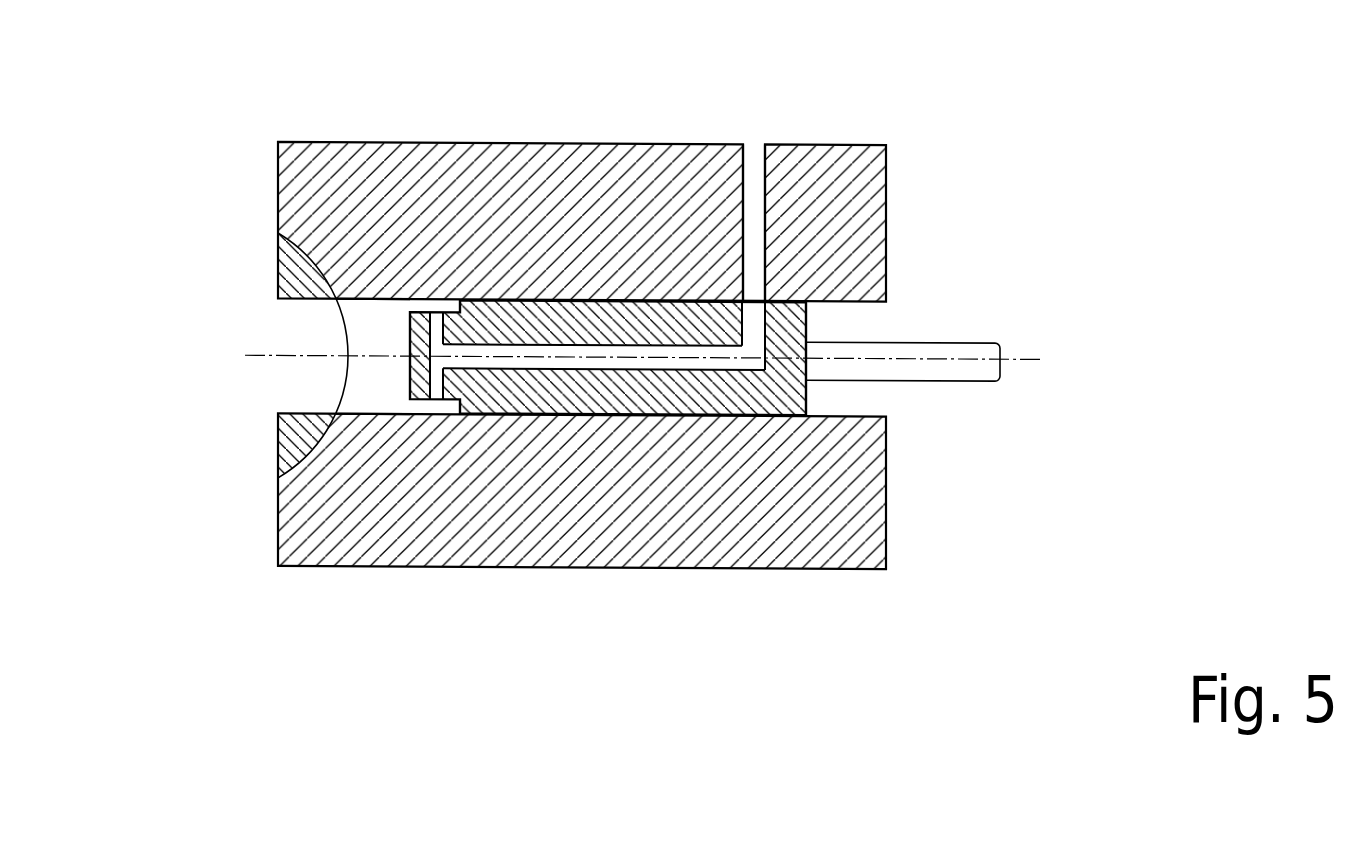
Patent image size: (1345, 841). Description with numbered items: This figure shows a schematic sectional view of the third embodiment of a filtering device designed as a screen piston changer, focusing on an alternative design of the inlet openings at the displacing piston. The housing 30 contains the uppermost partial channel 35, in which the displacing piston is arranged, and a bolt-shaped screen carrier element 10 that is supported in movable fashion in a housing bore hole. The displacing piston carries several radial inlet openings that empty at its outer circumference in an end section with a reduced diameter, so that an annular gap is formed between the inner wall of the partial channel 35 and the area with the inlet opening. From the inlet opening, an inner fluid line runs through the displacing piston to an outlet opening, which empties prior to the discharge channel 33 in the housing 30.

The screen carrier element 10 is at (292, 278).
The housing 30 is at (837, 173).
The discharge channel 33 is at (753, 170).
The partial channel 35 is at (375, 315).